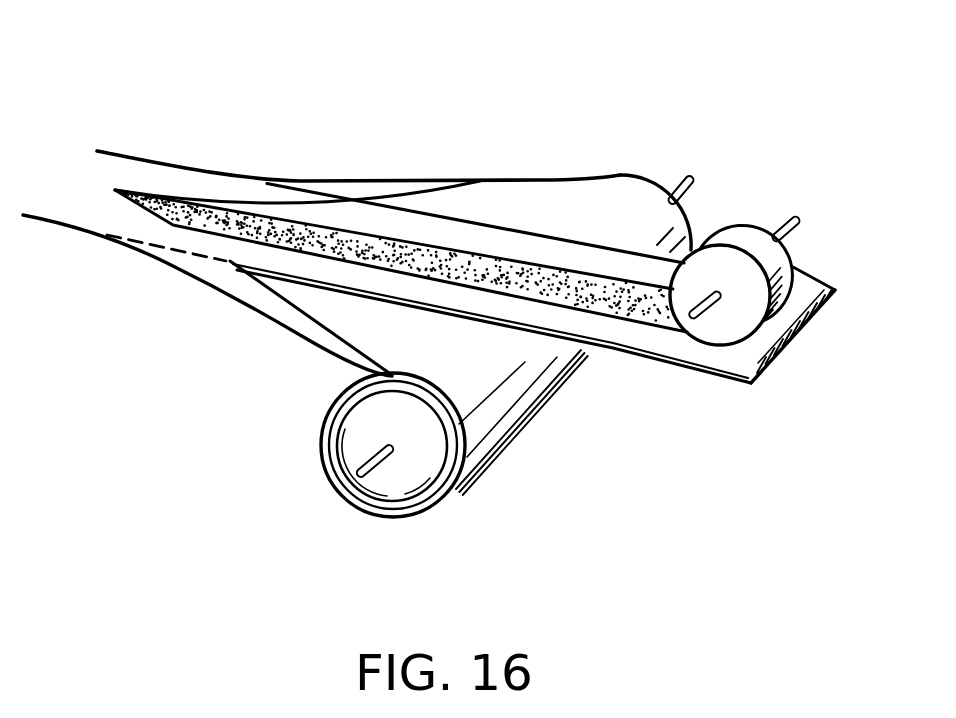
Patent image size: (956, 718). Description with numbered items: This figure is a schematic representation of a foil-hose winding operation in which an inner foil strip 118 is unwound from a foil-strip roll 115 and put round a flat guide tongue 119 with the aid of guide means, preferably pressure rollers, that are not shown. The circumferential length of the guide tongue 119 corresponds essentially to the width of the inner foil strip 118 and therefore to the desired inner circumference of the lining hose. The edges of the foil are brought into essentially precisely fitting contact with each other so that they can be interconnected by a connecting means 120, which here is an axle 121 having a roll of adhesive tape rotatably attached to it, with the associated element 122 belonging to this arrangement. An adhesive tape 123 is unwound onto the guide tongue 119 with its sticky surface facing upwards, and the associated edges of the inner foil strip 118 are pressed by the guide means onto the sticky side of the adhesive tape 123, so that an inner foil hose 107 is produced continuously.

The inner foil hose 107 is at (183, 186).
The foil-strip roll 115 is at (420, 445).
The inner foil strip 118 is at (245, 287).
The flat guide tongue 119 is at (753, 386).
The connecting means 120 is at (775, 163).
The axle 121 is at (807, 227).
The reel rim 122 is at (797, 271).
The adhesive tape 123 is at (654, 322).